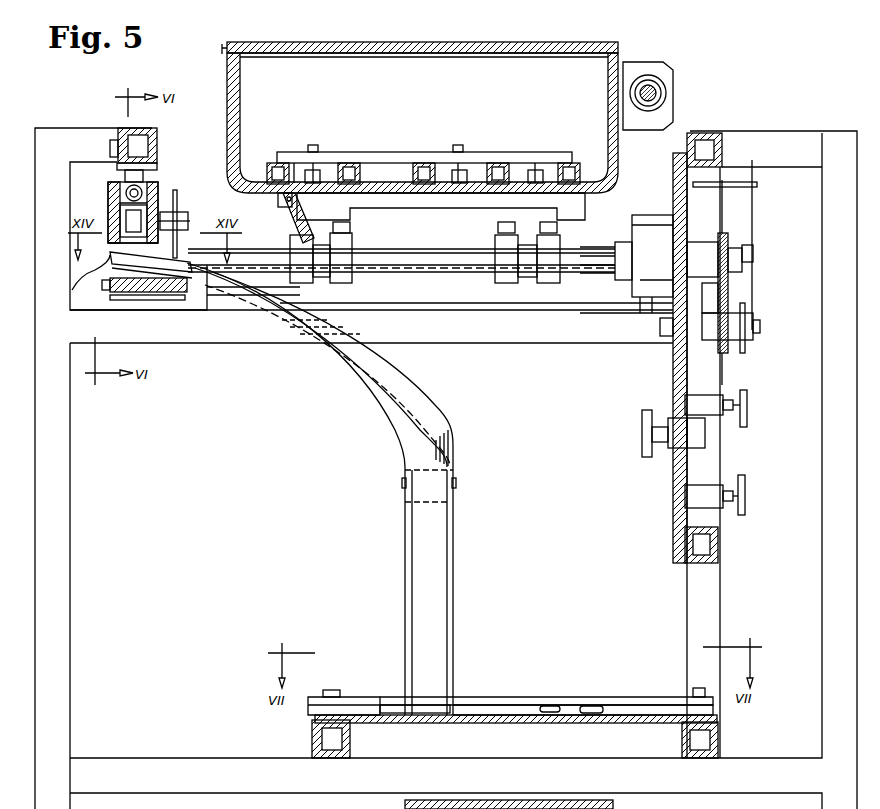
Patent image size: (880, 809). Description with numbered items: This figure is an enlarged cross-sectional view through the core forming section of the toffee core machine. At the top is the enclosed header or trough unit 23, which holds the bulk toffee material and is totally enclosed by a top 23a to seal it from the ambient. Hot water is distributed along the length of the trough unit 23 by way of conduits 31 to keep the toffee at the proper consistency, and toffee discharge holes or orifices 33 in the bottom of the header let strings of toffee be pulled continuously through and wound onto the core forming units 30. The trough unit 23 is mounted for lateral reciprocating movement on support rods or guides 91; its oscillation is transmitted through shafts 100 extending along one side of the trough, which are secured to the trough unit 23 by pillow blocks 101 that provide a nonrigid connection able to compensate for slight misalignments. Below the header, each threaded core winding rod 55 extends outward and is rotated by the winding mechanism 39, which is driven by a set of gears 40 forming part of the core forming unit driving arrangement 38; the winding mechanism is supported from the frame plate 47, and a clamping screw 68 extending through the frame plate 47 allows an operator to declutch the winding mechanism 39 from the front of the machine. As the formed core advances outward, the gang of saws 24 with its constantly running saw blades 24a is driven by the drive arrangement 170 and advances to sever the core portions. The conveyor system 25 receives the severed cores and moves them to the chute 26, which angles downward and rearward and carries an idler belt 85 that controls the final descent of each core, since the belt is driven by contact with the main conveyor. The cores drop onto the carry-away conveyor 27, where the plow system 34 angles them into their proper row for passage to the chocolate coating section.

The header or trough unit 23 is at (228, 86).
The top 23a is at (598, 42).
The pillow block 101 is at (660, 77).
The shaft 100 is at (667, 95).
The toffee discharge holes or orifices 33 is at (380, 183).
The conduits 31 is at (368, 165).
The gang of saws 24 is at (155, 183).
The drive arrangement 170 is at (112, 197).
The saw blades 24a is at (178, 200).
The conveyor system 25 is at (155, 292).
The support rods or guides 91 is at (388, 258).
The threaded core winding rod 55 is at (445, 265).
The core forming unit 30 is at (628, 218).
The winding mechanism 39 is at (618, 280).
The set of gears 40 is at (734, 293).
The core forming unit driving arrangement 38 is at (759, 320).
The frame plate 47 is at (673, 378).
The clamping screw 68 is at (648, 452).
The chute 26 is at (378, 398).
The idler belt 85 is at (415, 557).
The plow system 34 is at (362, 697).
The carry-away conveyor 27 is at (493, 705).